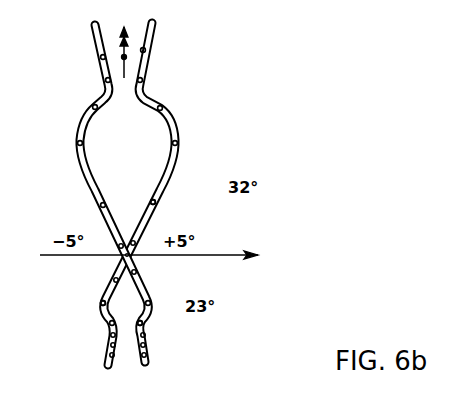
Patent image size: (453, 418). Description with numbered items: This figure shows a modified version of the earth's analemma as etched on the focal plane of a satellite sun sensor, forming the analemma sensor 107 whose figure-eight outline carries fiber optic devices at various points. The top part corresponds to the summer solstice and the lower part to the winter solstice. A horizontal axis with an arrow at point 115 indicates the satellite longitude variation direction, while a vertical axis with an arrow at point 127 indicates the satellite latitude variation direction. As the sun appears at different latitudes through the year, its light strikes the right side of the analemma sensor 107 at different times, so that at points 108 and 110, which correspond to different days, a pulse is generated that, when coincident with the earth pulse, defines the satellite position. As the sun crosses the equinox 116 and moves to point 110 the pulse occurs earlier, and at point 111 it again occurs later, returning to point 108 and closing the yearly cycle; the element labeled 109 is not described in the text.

The analemma sensor 107 is at (176, 128).
The point on the analemma 108 is at (156, 203).
The second arm of clip 109 is at (90, 106).
The point on the analemma 110 is at (146, 326).
The point on the analemma 111 is at (100, 303).
The satellite longitude variation direction axis 115 is at (246, 254).
The equinox 116 is at (131, 258).
The satellite latitude variation direction axis 127 is at (128, 52).